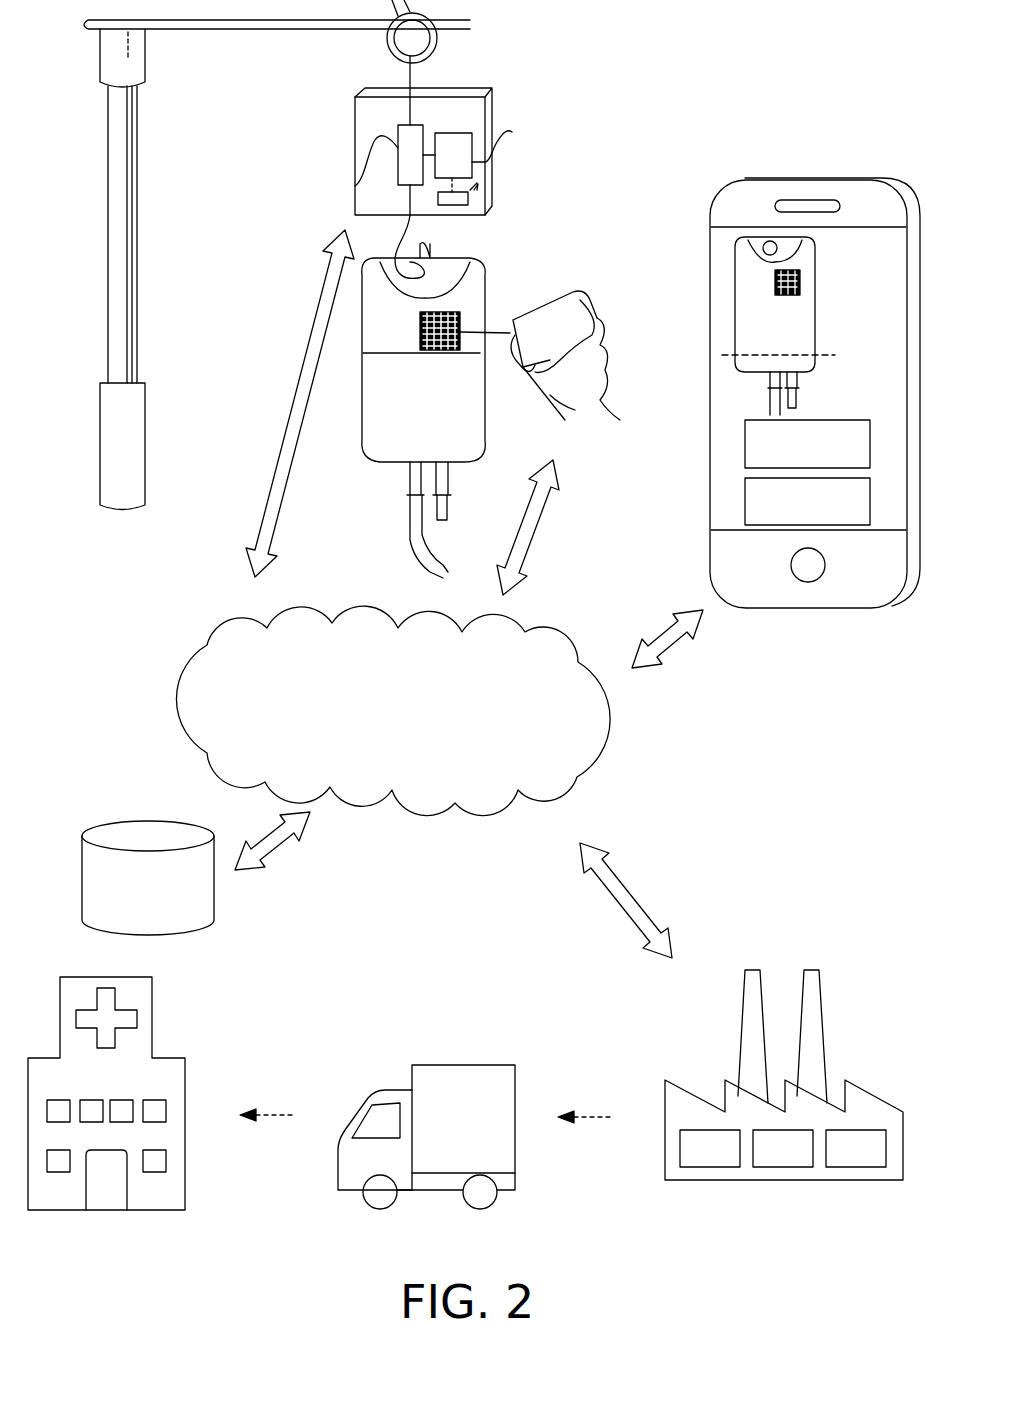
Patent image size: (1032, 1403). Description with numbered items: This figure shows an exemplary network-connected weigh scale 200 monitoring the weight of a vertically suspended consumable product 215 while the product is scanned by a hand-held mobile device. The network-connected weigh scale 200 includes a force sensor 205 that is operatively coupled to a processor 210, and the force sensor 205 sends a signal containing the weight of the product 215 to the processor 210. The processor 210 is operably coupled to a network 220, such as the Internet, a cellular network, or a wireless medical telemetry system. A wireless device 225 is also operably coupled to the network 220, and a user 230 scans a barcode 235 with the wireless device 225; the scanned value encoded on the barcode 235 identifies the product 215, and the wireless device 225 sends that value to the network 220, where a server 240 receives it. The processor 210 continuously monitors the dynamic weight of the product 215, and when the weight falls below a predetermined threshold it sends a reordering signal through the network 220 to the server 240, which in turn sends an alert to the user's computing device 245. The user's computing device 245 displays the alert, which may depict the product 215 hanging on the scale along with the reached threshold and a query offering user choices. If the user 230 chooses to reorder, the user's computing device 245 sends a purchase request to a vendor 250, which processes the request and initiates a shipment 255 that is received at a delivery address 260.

The network-connected weigh scale 200 is at (487, 110).
The force sensor 205 is at (355, 186).
The processor 210 is at (518, 146).
The product 215 is at (407, 396).
The network 220 is at (393, 710).
The wireless device 225 is at (585, 292).
The user 230 is at (565, 360).
The barcode 235 is at (412, 352).
The server 240 is at (216, 905).
The user's computing device 245 is at (796, 180).
The vendor 250 is at (760, 1180).
The shipment 255 is at (515, 1188).
The delivery address 260 is at (185, 1205).